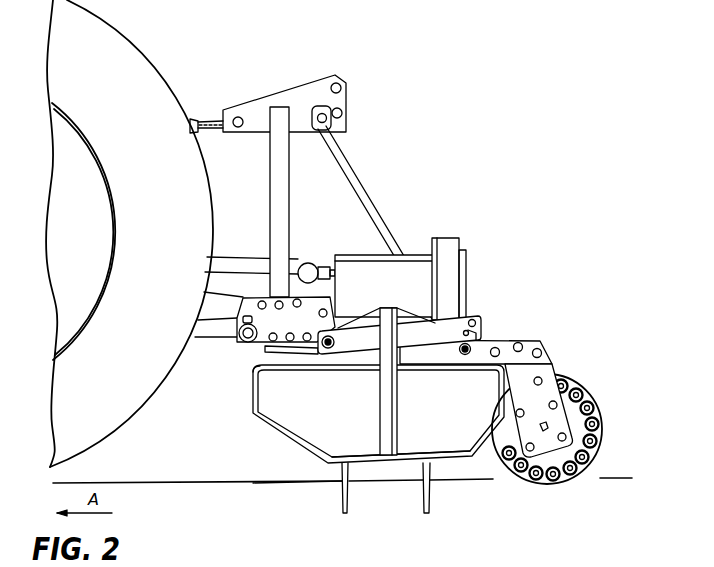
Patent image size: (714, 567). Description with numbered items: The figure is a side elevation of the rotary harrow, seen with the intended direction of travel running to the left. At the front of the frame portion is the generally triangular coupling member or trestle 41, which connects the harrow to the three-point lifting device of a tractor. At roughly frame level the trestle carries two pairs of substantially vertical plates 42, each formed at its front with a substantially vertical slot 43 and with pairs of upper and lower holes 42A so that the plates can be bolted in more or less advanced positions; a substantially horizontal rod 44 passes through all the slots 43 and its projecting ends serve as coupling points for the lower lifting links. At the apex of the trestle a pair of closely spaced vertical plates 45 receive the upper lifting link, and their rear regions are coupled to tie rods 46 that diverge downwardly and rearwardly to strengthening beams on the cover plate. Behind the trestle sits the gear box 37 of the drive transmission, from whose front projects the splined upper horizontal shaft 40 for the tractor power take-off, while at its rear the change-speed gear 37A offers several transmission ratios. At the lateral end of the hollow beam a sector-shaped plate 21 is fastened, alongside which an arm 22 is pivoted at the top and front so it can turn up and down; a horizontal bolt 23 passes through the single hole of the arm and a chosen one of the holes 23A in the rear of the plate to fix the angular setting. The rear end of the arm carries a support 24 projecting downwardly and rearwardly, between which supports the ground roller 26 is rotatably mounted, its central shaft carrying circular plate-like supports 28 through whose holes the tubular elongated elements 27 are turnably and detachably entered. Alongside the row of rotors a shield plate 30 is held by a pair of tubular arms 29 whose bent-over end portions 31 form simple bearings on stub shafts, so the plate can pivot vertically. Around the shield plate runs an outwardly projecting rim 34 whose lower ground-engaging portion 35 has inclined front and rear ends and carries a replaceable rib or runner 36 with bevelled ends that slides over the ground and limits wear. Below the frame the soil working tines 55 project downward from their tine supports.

The sector-shaped plates 21 is at (475, 315).
The arms 22 is at (363, 350).
The bolts 23 is at (465, 356).
The holes 23A is at (480, 326).
The supports 24 is at (538, 382).
The ground roller 26 is at (598, 452).
The elongated elements 27 is at (592, 398).
The plate-like supports 28 is at (600, 430).
The arms 29 is at (390, 415).
The shield plates 30 is at (278, 407).
The end portions 31 is at (406, 305).
The rim 34 is at (252, 389).
The ground-engaging portion 35 is at (422, 453).
The rib or runner 36 is at (390, 468).
The gear box 37 is at (365, 262).
The change-speed gear 37A is at (452, 243).
The shaft 40 is at (319, 265).
The coupling member or trestle 41 is at (275, 165).
The plates 42 is at (253, 297).
The holes 42A is at (290, 333).
The slots 43 is at (240, 335).
The rod 44 is at (246, 343).
The plates 45 is at (266, 102).
The tie rods 46 is at (365, 193).
The tine 55 is at (342, 500).